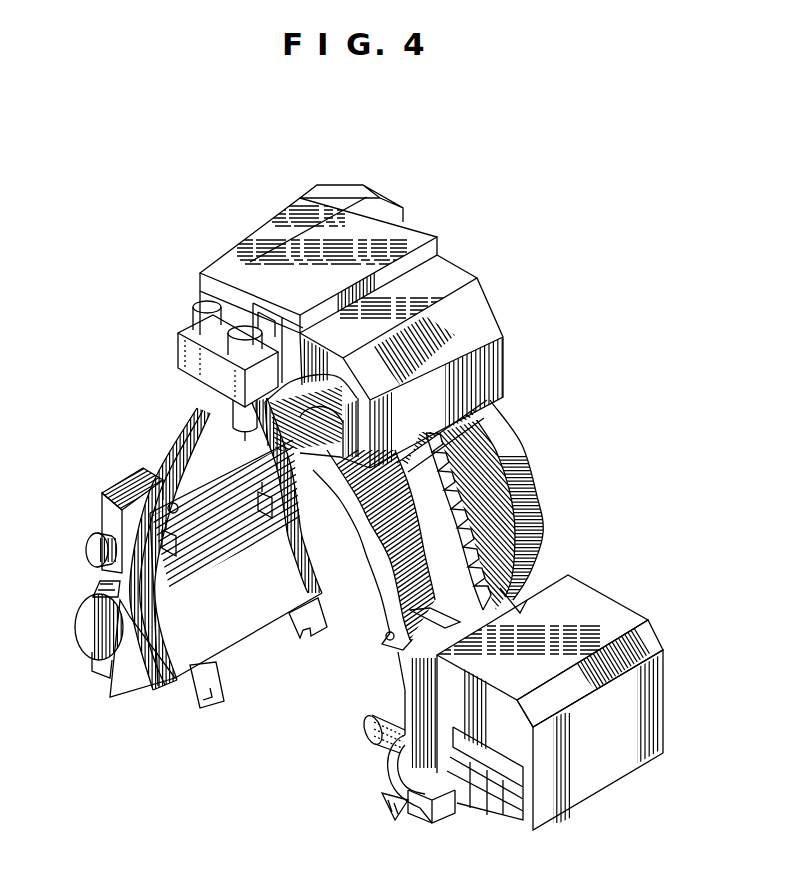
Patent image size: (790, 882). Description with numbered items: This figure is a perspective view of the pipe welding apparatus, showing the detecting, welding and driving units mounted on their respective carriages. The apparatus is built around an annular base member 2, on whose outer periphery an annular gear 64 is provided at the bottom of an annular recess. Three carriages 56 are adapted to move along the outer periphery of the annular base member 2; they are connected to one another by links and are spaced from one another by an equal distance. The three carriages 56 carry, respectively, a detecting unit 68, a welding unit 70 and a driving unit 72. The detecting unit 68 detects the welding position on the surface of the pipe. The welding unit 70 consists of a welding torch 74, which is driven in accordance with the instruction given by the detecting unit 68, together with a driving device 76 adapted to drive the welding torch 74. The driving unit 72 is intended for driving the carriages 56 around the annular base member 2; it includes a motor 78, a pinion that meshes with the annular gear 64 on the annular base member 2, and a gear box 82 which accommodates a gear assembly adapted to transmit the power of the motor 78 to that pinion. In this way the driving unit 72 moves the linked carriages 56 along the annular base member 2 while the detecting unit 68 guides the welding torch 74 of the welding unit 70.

The annular base member 2 is at (397, 563).
The carriages 56 is at (452, 440).
The annular gear 64 is at (462, 515).
The detecting unit 68 is at (679, 599).
The welding unit 70 is at (492, 219).
The driving unit 72 is at (97, 502).
The welding torch 74 is at (233, 406).
The driving device 76 is at (275, 258).
The motor 78 is at (93, 630).
The gear box 82 is at (107, 517).